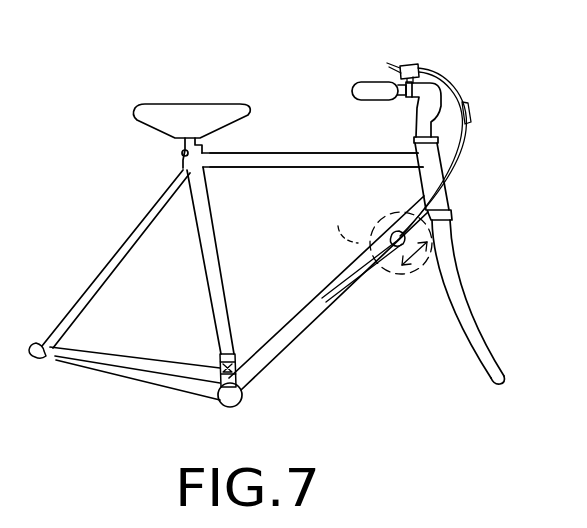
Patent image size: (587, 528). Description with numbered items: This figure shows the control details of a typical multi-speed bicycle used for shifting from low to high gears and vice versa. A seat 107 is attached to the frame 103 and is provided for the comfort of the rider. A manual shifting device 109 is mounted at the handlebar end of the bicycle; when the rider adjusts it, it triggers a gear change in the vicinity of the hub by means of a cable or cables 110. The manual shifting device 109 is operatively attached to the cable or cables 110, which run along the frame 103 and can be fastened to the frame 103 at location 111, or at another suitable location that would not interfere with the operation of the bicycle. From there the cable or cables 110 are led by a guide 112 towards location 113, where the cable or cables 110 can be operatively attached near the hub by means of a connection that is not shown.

The frame 103 is at (258, 154).
The seat 107 is at (205, 108).
The manual shifting device 109 is at (407, 65).
The cable or cables 110 is at (470, 113).
The location 111 is at (393, 268).
The guide 112 is at (235, 352).
The location 113 is at (37, 343).